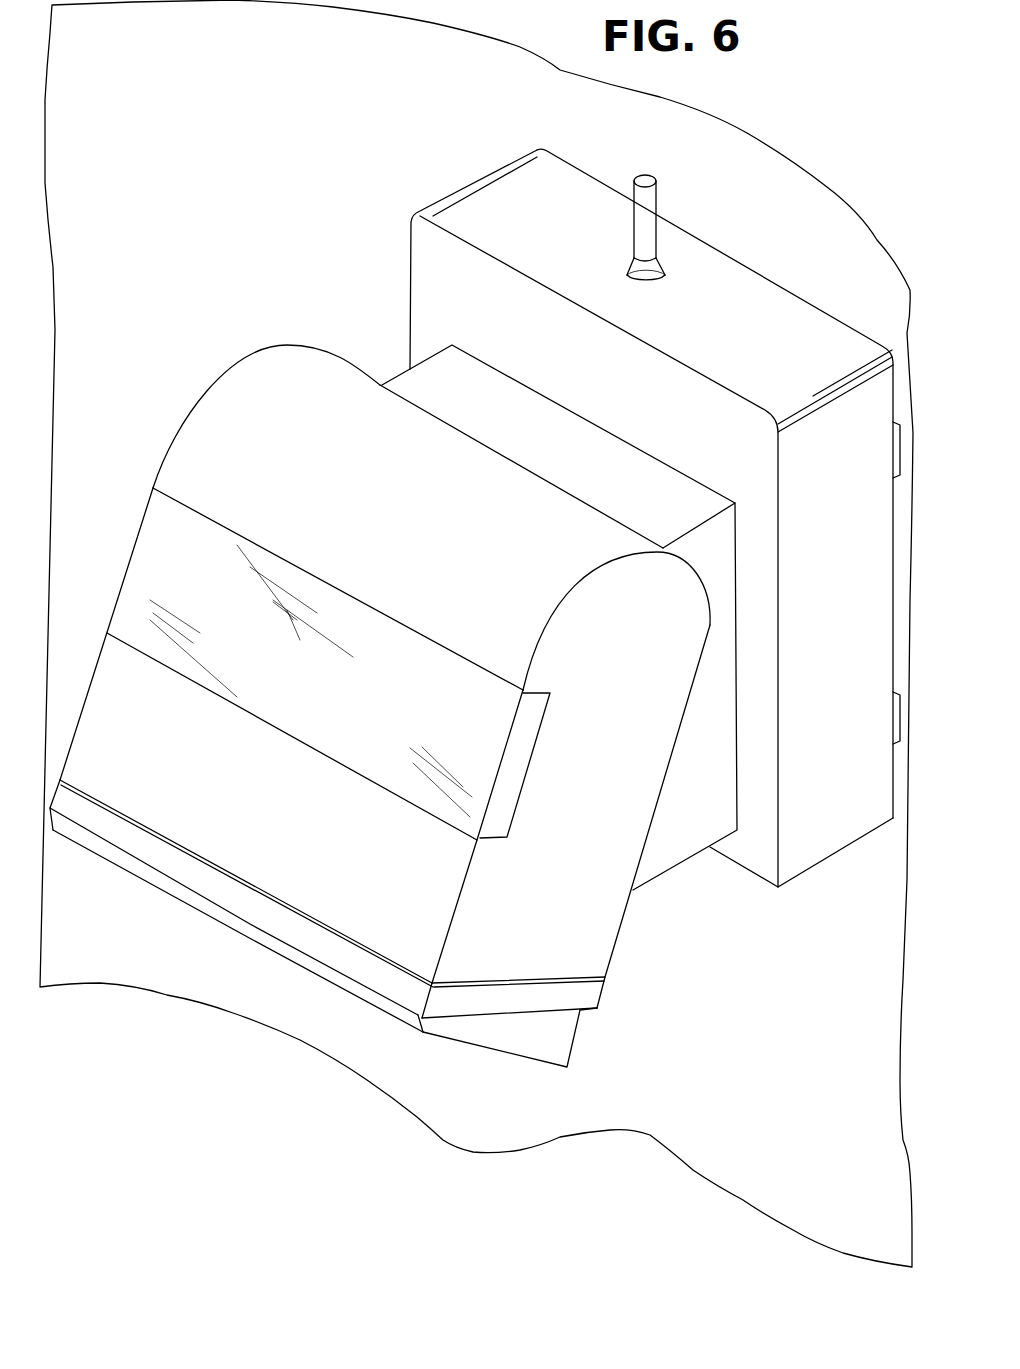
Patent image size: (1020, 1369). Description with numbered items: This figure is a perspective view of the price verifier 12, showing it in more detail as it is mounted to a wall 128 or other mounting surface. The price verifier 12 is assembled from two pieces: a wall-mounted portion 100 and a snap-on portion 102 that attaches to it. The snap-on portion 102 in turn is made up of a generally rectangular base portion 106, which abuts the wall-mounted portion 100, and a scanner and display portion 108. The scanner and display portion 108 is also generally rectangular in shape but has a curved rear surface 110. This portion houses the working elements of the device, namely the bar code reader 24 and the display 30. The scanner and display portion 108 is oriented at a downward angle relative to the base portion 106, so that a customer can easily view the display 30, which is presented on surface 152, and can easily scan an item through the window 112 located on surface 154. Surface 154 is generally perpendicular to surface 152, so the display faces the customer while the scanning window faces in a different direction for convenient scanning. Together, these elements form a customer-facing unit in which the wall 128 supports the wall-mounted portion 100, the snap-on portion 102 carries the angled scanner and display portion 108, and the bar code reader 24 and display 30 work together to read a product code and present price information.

The price verifier 12 is at (302, 130).
The bar code reader 24 is at (287, 953).
The display 30 is at (203, 577).
The wall-mounted portion 100 is at (748, 250).
The snap-on portion 102 is at (238, 350).
The base portion 106 is at (397, 373).
The scanner and display portion 108 is at (192, 402).
The curved rear surface 110 is at (287, 345).
The window 112 is at (493, 1050).
The wall 128 is at (722, 140).
The display surface 152 is at (533, 1013).
The scanning surface 154 is at (147, 838).